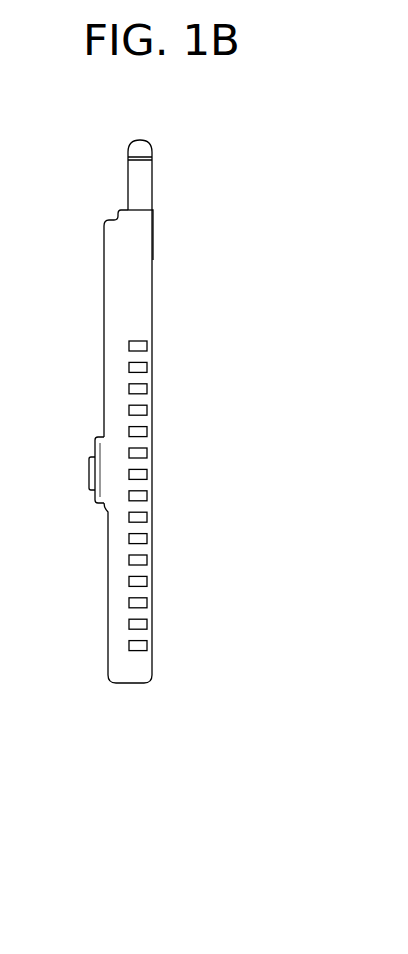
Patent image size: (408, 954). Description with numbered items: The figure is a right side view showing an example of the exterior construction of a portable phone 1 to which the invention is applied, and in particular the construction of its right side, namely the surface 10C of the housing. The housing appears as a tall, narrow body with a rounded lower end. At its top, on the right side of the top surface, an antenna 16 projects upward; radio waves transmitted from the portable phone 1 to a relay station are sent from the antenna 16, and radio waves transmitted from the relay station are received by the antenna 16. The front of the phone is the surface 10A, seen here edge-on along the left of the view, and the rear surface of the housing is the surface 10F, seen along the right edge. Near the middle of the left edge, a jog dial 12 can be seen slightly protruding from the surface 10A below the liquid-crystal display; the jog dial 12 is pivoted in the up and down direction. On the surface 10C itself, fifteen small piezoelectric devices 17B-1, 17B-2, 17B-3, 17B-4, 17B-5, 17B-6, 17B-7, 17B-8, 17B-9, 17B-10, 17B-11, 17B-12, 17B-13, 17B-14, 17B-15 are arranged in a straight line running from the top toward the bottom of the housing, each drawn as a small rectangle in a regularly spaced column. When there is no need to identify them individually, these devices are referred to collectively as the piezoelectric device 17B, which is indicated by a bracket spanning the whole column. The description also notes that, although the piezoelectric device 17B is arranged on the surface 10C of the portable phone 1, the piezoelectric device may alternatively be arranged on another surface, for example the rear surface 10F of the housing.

The portable phone 1 is at (165, 475).
The surface 10A is at (104, 297).
The surface 10C is at (140, 263).
The surface 10F is at (153, 224).
The jog dial 12 is at (89, 471).
The antenna 16 is at (150, 143).
The piezoelectric device 17B is at (223, 475).
The piezoelectric device 17B-1 is at (148, 346).
The piezoelectric device 17B-2 is at (148, 367).
The piezoelectric device 17B-3 is at (148, 389).
The piezoelectric device 17B-4 is at (148, 410).
The piezoelectric device 17B-5 is at (148, 432).
The piezoelectric device 17B-6 is at (148, 453).
The piezoelectric device 17B-7 is at (148, 474).
The piezoelectric device 17B-8 is at (148, 496).
The piezoelectric device 17B-9 is at (148, 517).
The piezoelectric device 17B-10 is at (148, 539).
The piezoelectric device 17B-11 is at (148, 560).
The piezoelectric device 17B-12 is at (148, 581).
The piezoelectric device 17B-13 is at (148, 603).
The piezoelectric device 17B-14 is at (148, 624).
The piezoelectric device 17B-15 is at (192, 659).